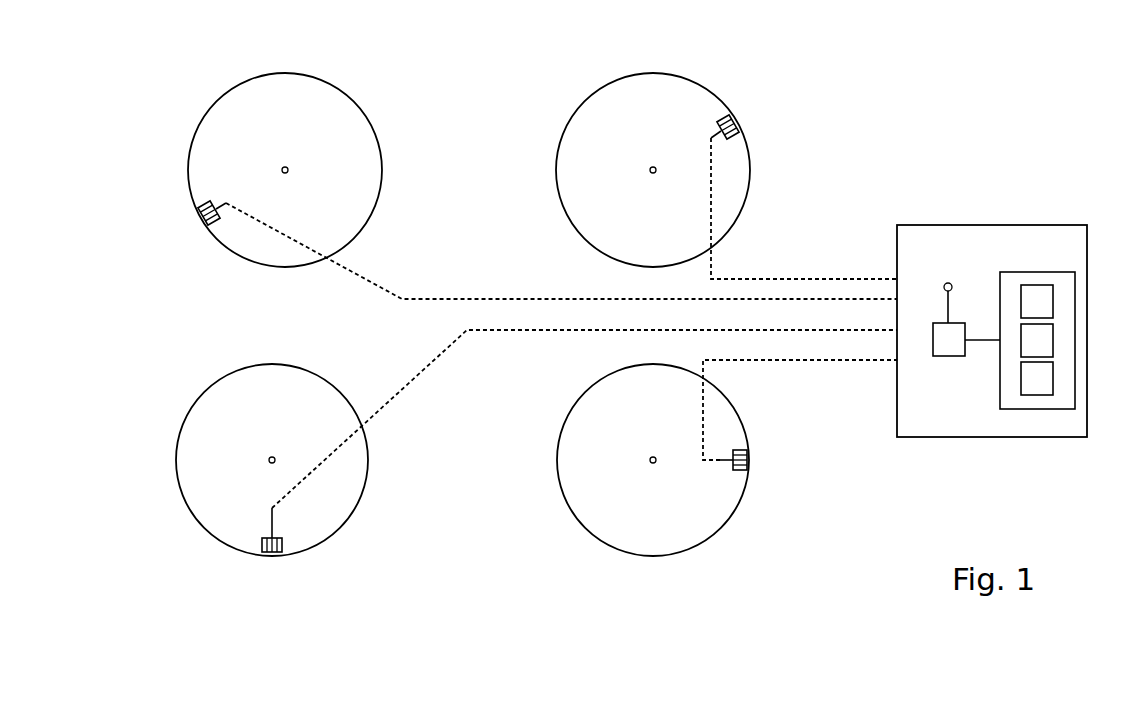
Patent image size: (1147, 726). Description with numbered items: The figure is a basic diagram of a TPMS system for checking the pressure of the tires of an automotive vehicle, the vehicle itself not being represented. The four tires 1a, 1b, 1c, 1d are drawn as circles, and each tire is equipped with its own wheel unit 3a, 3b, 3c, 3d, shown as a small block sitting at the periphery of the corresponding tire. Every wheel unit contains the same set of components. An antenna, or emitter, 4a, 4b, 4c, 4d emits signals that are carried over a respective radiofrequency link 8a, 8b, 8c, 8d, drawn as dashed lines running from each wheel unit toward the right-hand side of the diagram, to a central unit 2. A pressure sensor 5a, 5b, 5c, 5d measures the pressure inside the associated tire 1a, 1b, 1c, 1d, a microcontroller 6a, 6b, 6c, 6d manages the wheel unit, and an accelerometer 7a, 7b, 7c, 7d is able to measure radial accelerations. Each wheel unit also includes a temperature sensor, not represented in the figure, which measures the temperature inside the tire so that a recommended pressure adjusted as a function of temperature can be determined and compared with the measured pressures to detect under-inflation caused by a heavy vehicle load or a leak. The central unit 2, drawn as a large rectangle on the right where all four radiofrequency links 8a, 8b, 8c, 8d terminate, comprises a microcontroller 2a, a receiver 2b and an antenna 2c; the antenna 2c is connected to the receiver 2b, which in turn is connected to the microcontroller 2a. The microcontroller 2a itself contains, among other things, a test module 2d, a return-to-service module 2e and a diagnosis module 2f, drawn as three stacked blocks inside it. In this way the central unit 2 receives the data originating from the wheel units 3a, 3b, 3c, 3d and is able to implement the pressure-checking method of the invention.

The tire 1a is at (330, 84).
The tire 1b is at (365, 490).
The tire 1c is at (700, 87).
The tire 1d is at (653, 553).
The central unit 2 is at (1068, 225).
The microcontroller 2a is at (1040, 409).
The receiver 2b is at (939, 357).
The antenna 2c is at (949, 283).
The test module 2d is at (1044, 303).
The return-to-service module 2e is at (1044, 342).
The diagnosis module 2f is at (1044, 378).
The wheel unit 3a is at (221, 226).
The wheel unit 3b is at (282, 559).
The wheel unit 3c is at (746, 122).
The wheel unit 3d is at (741, 448).
The antenna 4a is at (226, 203).
The antenna 4b is at (275, 524).
The antenna 4c is at (716, 138).
The antenna 4d is at (721, 462).
The pressure sensor 5a is at (198, 207).
The pressure sensor 5b is at (261, 548).
The pressure sensor 5c is at (740, 135).
The pressure sensor 5d is at (748, 469).
The microcontroller 6a is at (203, 219).
The microcontroller 6b is at (268, 553).
The microcontroller 6c is at (719, 130).
The microcontroller 6d is at (750, 465).
The accelerometer 7a is at (206, 228).
The accelerometer 7b is at (284, 553).
The accelerometer 7c is at (733, 119).
The accelerometer 7d is at (749, 453).
The radiofrequency link 8a is at (445, 298).
The radiofrequency link 8b is at (508, 331).
The radiofrequency link 8c is at (835, 279).
The radiofrequency link 8d is at (840, 360).